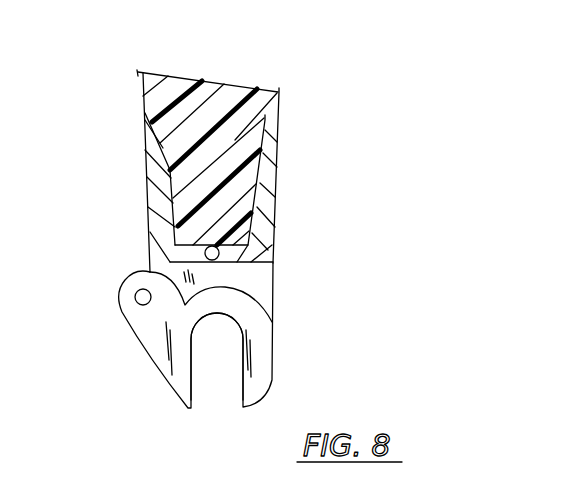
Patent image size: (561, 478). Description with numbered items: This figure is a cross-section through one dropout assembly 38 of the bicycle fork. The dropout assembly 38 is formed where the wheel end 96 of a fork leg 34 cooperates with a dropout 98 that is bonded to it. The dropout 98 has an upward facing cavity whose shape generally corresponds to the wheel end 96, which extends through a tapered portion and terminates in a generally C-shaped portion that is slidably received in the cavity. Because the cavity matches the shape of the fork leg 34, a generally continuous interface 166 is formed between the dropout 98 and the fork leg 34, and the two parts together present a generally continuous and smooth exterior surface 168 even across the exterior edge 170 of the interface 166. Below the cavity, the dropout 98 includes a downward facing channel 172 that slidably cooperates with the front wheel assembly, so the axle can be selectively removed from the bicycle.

The fork leg 34 is at (232, 84).
The dropout assembly 38 is at (114, 190).
The exterior edge 170 is at (145, 117).
The wheel end 96 is at (238, 143).
The exterior surface 168 is at (277, 153).
The interface 166 is at (270, 195).
The dropout 98 is at (267, 282).
The channel 172 is at (220, 388).